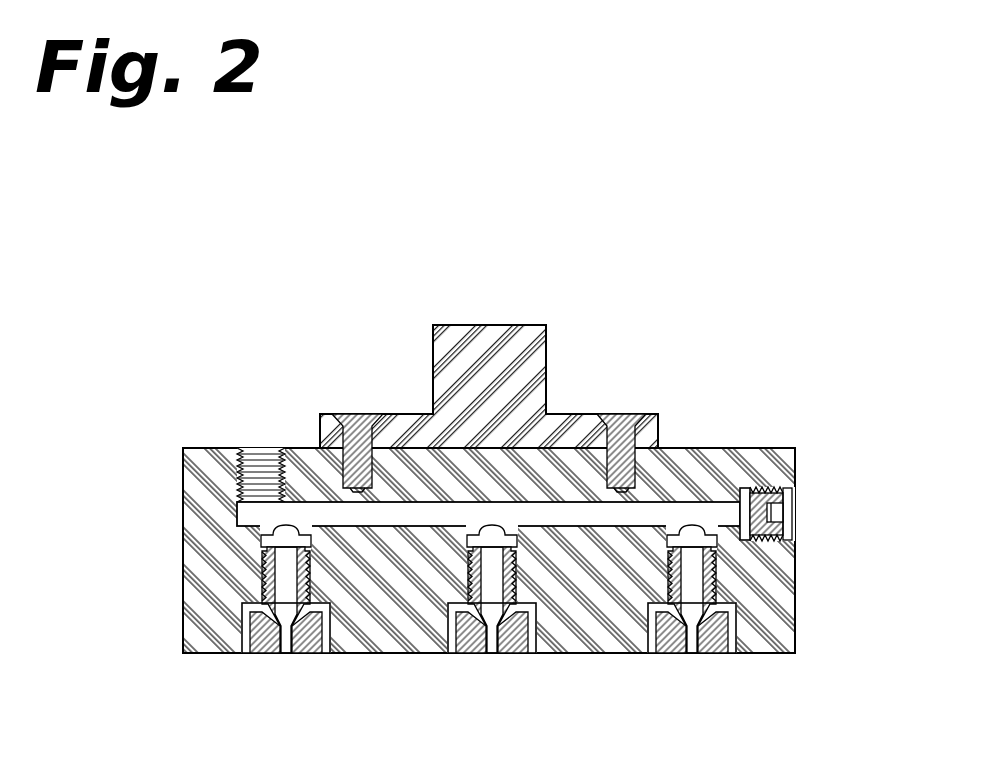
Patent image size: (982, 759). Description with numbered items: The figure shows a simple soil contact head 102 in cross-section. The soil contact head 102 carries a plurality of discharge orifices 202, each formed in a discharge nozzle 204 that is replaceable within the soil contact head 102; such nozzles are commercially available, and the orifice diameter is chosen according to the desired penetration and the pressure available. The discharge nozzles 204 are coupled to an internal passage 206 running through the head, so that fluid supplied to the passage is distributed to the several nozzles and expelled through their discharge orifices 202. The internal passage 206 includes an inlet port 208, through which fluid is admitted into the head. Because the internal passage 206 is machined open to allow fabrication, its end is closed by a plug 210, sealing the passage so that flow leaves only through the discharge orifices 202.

The soil contact head 102 is at (197, 587).
The discharge orifice 202 is at (287, 643).
The discharge nozzle 204 is at (305, 652).
The internal passage 206 is at (653, 515).
The inlet port 208 is at (249, 455).
The plug 210 is at (778, 512).